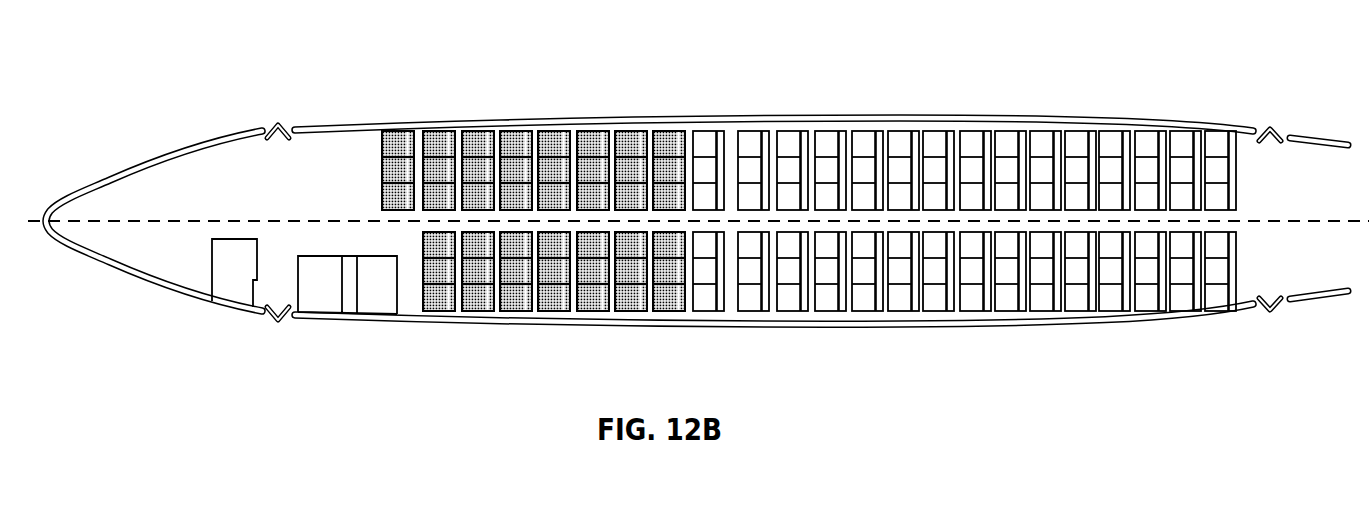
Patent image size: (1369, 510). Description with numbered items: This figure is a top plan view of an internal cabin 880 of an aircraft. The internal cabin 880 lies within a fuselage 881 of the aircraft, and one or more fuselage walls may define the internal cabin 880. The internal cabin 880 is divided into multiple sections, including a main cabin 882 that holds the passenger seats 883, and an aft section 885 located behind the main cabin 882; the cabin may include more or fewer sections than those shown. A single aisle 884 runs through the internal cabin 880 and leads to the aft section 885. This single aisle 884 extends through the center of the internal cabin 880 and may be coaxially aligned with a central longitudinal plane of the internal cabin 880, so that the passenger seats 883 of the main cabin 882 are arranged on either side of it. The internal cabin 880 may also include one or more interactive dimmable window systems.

The internal cabin 880 is at (295, 60).
The fuselage 881 is at (500, 123).
The main cabin 882 is at (437, 147).
The passenger seats 883 is at (707, 150).
The single aisle 884 is at (828, 213).
The aft section 885 is at (1256, 152).